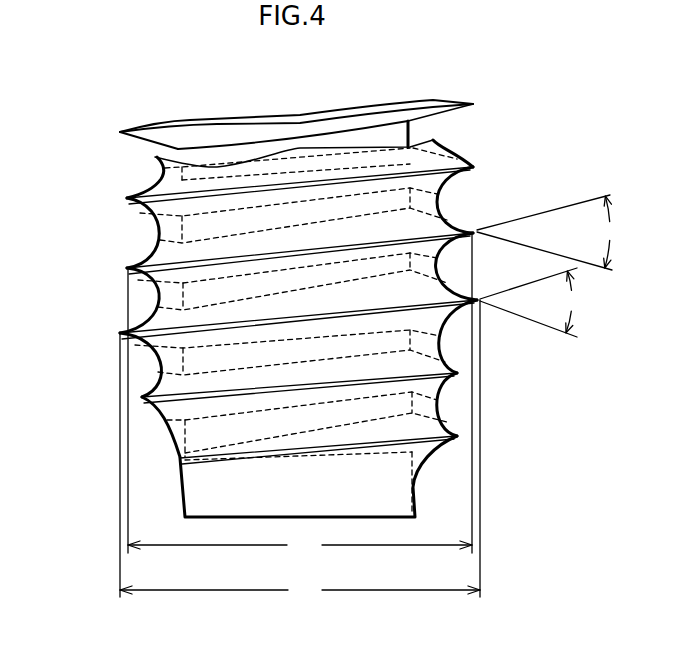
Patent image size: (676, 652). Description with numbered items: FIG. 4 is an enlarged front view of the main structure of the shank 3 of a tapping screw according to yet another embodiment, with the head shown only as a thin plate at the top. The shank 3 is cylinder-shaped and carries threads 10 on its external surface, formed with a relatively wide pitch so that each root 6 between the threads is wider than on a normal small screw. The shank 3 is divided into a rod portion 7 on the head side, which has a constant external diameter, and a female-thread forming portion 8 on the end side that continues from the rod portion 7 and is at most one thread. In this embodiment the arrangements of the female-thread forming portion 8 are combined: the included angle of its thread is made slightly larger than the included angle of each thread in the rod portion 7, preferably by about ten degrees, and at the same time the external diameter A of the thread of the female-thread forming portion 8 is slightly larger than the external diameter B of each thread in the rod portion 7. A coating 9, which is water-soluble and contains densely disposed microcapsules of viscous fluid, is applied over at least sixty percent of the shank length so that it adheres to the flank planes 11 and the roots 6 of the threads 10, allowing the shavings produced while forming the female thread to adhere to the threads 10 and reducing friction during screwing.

The shank 3 is at (255, 148).
The threads 10 is at (362, 176).
The root 6 is at (447, 193).
The rod portion 7 is at (53, 123).
The female-thread forming portion 8 is at (55, 297).
The coating 9 is at (163, 417).
The flank planes 11 is at (445, 322).
The external diameter of the female-thread forming portion thread A is at (300, 451).
The external diameter of the rod portion thread B is at (300, 395).